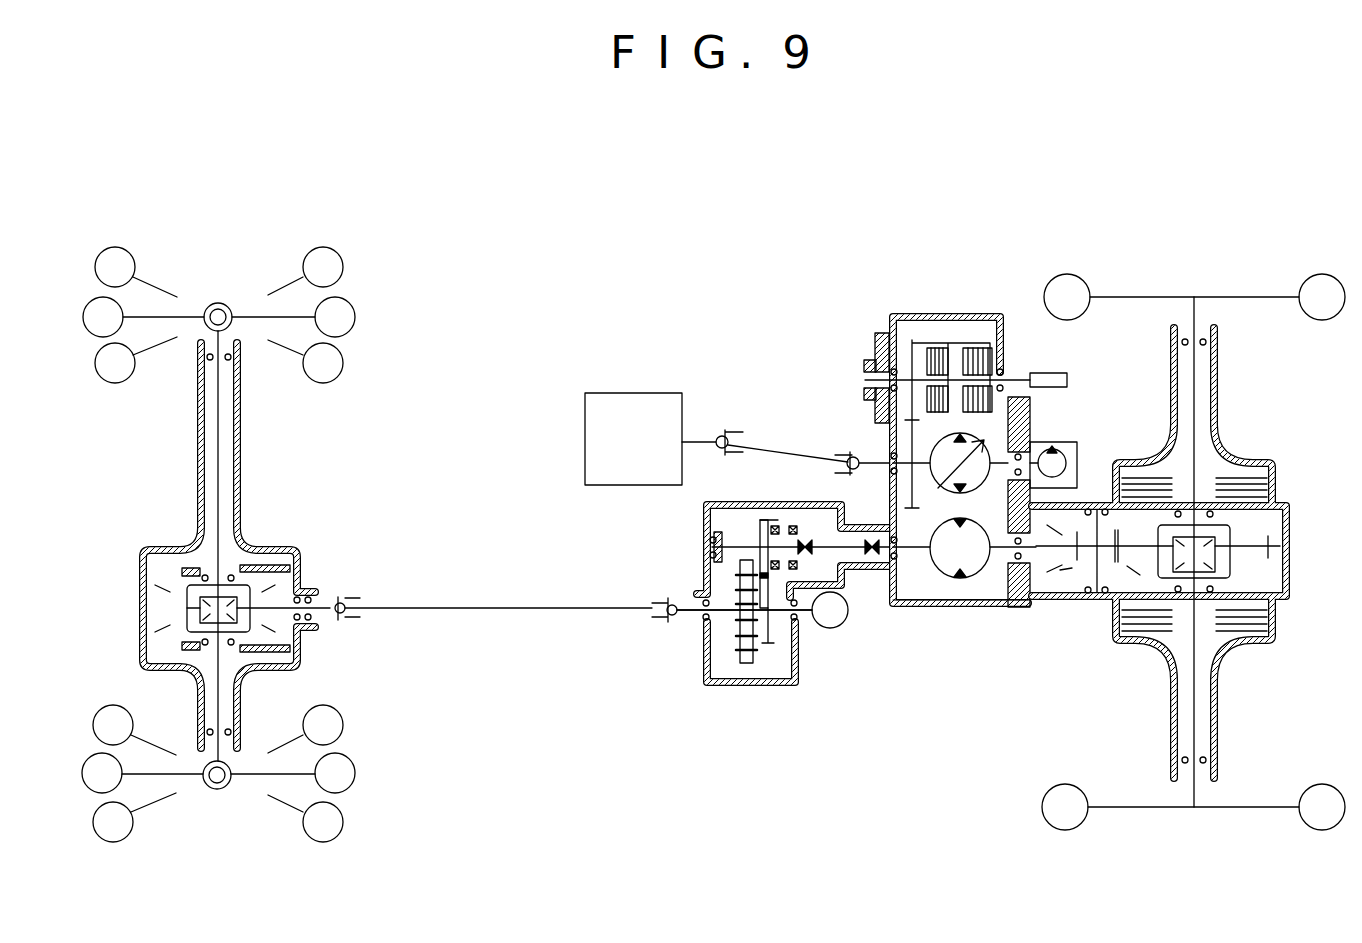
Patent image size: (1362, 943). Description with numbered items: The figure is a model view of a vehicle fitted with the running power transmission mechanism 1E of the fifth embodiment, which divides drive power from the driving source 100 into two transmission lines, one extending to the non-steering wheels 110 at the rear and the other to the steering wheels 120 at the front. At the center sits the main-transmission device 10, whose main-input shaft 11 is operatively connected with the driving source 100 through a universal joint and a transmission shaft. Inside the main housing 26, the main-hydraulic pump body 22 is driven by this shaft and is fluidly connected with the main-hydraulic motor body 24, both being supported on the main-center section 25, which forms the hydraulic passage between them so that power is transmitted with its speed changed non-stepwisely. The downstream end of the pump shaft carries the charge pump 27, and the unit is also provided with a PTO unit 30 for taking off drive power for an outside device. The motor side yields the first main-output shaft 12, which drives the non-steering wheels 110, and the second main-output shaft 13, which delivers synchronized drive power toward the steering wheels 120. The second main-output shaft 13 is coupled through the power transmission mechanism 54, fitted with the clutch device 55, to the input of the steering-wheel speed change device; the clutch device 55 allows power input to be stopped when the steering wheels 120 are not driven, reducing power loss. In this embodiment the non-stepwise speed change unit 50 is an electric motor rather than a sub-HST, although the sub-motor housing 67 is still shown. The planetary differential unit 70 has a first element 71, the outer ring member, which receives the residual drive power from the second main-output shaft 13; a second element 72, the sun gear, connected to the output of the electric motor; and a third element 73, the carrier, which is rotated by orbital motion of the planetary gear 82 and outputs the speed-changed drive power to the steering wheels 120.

The running power transmission mechanism 1E is at (823, 252).
The main-transmission device 10 is at (976, 293).
The main-input shaft 11 is at (868, 443).
The first main-output shaft 12 is at (990, 620).
The second main-output shaft 13 is at (932, 620).
The main-hydraulic pump body 22 is at (1000, 438).
The main-hydraulic motor body 24 is at (957, 609).
The main-center section 25 is at (1027, 615).
The main housing 26 is at (922, 620).
The charge pump 27 is at (1076, 452).
The PTO unit 30 is at (940, 332).
The non-stepwise speed change unit 50 is at (826, 656).
The power transmission mechanism 54 is at (760, 519).
The clutch device 55 is at (792, 513).
The sub-motor housing 67 is at (805, 512).
The planetary differential unit 70 is at (722, 544).
The first element 71 is at (756, 518).
The second element 72 is at (703, 618).
The third element 73 is at (698, 592).
The planetary gear 82 is at (718, 585).
The driving source 100 is at (626, 402).
The non-steering wheels 110 is at (1316, 280).
The steering wheels 120 is at (327, 258).